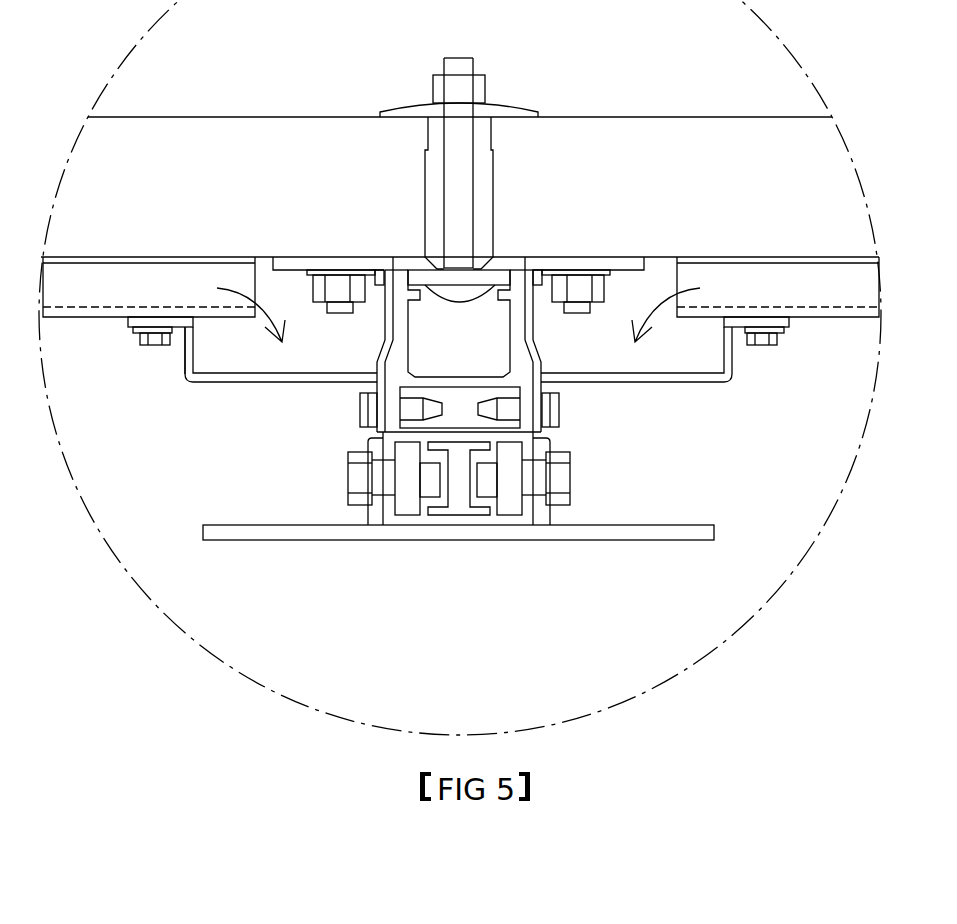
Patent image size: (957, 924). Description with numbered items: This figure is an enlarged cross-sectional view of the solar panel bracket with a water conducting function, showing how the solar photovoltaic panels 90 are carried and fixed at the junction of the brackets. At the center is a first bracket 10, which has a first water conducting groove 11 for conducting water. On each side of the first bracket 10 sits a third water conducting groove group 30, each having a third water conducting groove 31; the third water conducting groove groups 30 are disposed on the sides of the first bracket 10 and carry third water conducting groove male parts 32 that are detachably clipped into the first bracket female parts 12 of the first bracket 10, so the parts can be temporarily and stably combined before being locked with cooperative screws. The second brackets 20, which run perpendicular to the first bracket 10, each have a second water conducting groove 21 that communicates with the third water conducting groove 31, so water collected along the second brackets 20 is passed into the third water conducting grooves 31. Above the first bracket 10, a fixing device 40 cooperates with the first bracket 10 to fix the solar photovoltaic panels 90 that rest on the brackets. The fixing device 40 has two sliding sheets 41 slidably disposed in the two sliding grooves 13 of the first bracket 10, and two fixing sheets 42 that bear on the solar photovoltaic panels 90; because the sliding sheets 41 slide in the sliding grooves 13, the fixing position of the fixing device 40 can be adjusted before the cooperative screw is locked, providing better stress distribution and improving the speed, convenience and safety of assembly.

The first bracket 10 is at (475, 320).
The first water conducting groove 11 is at (478, 354).
The first bracket female part 12 is at (531, 276).
The sliding groove 13 is at (408, 276).
The second bracket 20 is at (118, 317).
The second water conducting groove 21 is at (120, 301).
The third water conducting groove group 30 is at (458, 380).
The third water conducting groove 31 is at (243, 383).
The third water conducting groove male part 32 is at (537, 280).
The fixing device 40 is at (511, 92).
The sliding sheet 41 is at (500, 282).
The fixing sheet 42 is at (525, 113).
The solar photovoltaic panel 90 is at (229, 176).